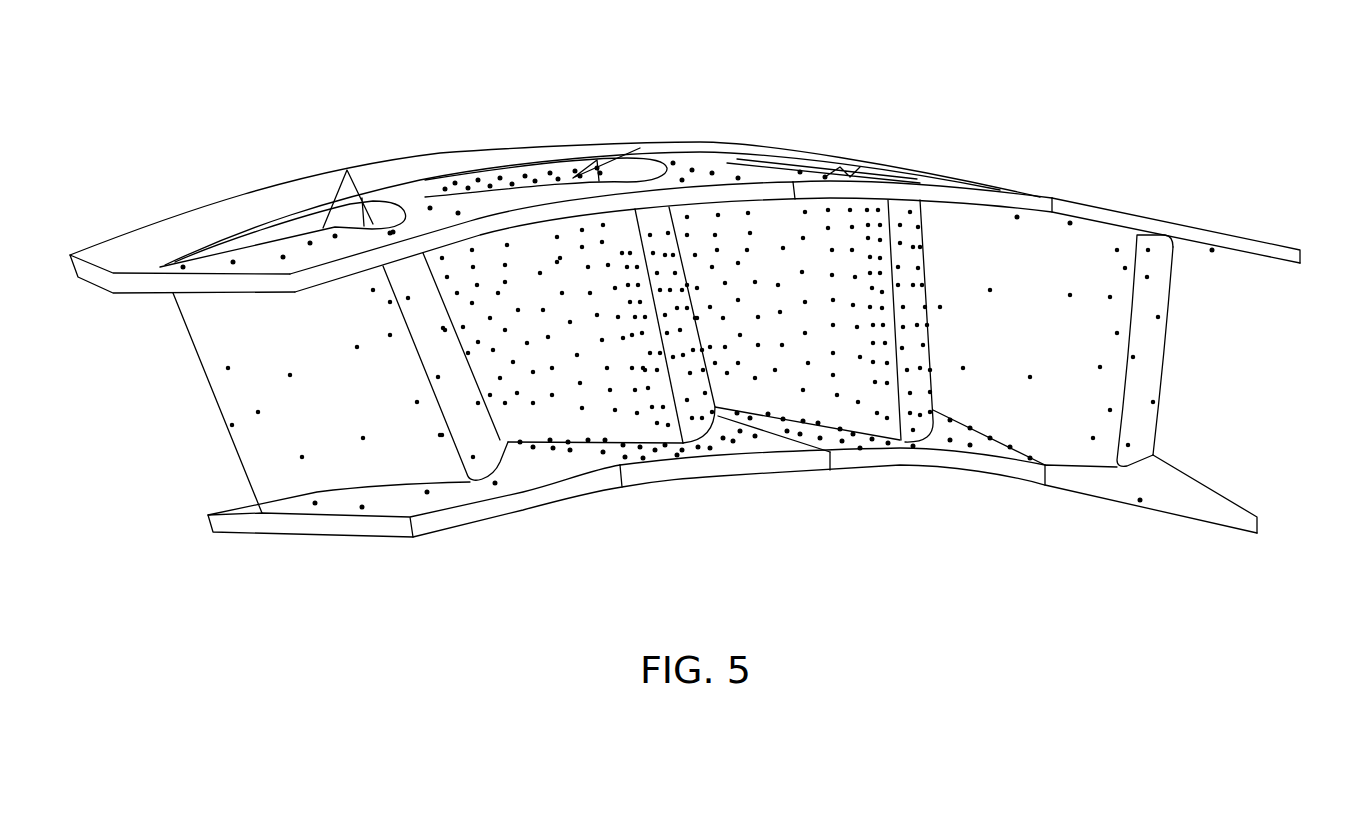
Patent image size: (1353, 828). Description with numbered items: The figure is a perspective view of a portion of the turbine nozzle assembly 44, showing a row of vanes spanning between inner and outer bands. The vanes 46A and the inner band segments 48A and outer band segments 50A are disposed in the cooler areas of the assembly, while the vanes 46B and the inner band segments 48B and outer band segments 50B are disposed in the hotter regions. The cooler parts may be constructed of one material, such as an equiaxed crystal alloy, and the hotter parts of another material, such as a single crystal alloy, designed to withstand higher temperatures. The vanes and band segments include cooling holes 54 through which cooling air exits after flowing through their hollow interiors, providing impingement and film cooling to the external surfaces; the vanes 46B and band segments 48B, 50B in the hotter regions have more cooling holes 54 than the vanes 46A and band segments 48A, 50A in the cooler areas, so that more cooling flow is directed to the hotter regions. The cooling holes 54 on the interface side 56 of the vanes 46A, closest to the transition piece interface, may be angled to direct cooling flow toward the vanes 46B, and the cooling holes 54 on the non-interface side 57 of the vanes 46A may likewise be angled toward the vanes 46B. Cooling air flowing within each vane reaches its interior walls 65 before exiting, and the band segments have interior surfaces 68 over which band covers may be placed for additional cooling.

The nozzle assembly 44 is at (1174, 100).
The vanes 46A is at (230, 427).
The vanes 46B is at (533, 250).
The inner band segments 48A is at (513, 500).
The inner band segments 48B is at (718, 467).
The outer band segments 50A is at (333, 270).
The outer band segments 50B is at (672, 197).
The cooling holes 54 is at (627, 237).
The interface side 56 is at (1143, 425).
The non-interface side 57 is at (407, 273).
The interior walls 65 is at (270, 230).
The interior surfaces 68 is at (1253, 258).